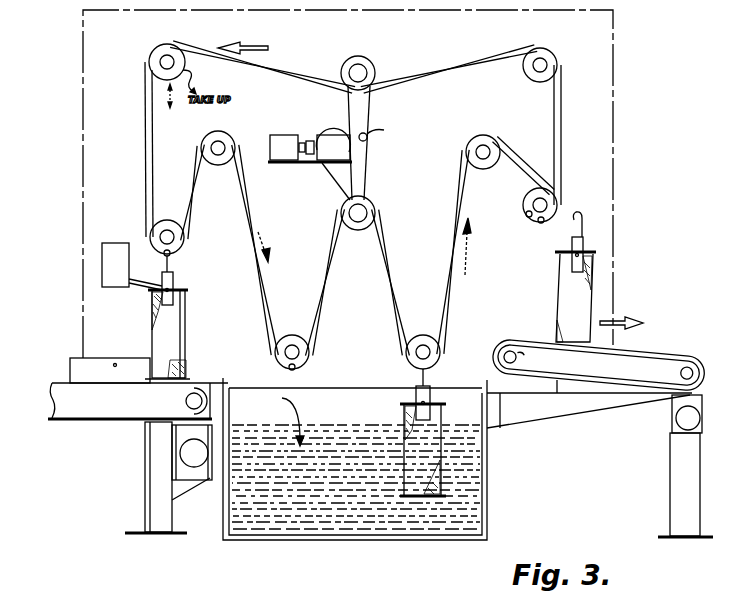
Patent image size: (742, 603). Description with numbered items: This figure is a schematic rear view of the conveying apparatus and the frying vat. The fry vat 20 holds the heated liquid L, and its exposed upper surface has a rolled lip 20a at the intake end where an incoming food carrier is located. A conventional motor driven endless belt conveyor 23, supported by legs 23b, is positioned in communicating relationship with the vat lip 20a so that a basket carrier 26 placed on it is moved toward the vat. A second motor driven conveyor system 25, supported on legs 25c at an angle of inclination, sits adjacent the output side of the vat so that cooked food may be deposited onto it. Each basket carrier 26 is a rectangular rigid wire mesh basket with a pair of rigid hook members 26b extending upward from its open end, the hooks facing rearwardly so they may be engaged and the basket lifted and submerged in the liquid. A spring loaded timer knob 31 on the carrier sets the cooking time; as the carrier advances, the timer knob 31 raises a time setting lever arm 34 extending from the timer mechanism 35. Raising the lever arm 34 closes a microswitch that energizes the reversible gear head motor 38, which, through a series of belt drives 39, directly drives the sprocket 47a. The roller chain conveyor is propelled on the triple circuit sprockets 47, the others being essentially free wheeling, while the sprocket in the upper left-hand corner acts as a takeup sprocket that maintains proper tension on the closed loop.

The fry vat 20 is at (296, 542).
The rolled lip 20a is at (186, 370).
The endless belt conveyor 23 is at (50, 375).
The legs 23b is at (155, 477).
The second motor driven conveyor system 25 is at (664, 348).
The legs 25c is at (676, 497).
The basket carrier 26 is at (180, 332).
The rigid hook members 26b is at (175, 288).
The timer knob 31 is at (182, 300).
The time setting lever arm 34 is at (148, 280).
The timer mechanism 35 is at (115, 243).
The reversible gear head motor 38 is at (283, 136).
The belt drives 39 is at (372, 115).
The triple circuit sprockets 47 is at (152, 54).
The sprocket 47a is at (372, 60).